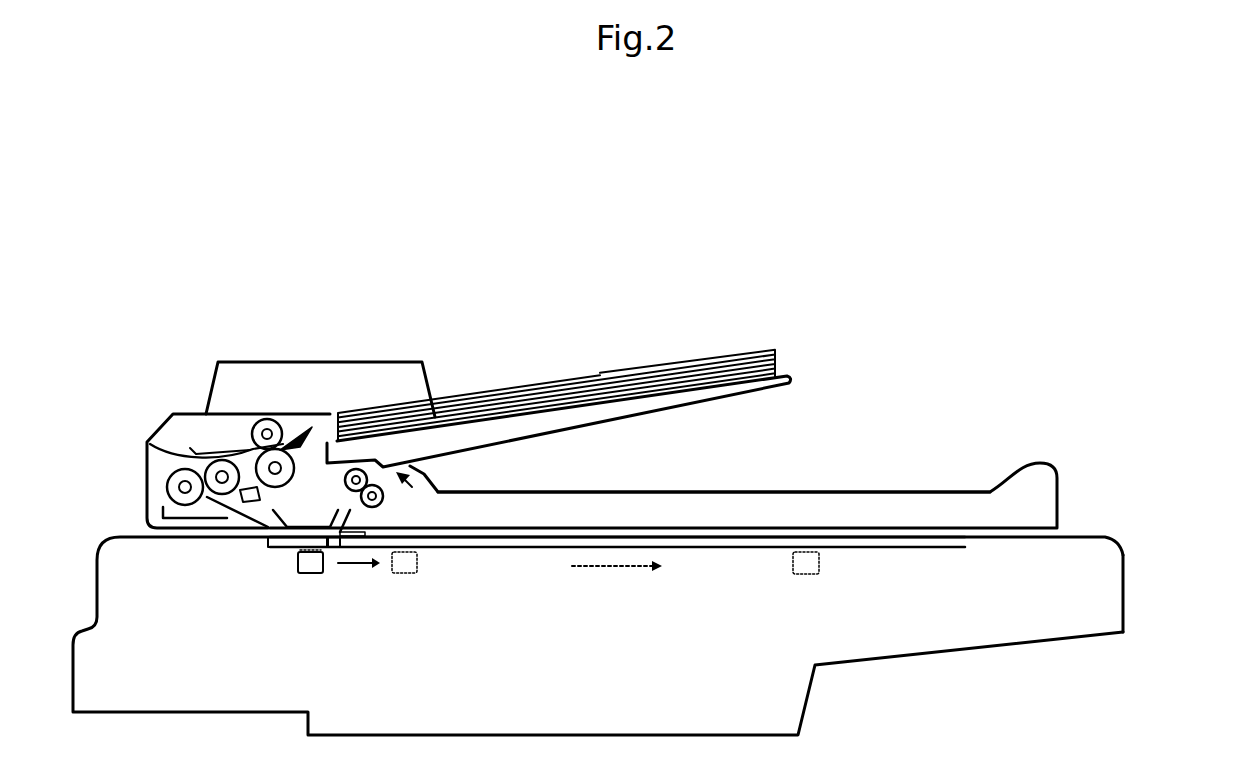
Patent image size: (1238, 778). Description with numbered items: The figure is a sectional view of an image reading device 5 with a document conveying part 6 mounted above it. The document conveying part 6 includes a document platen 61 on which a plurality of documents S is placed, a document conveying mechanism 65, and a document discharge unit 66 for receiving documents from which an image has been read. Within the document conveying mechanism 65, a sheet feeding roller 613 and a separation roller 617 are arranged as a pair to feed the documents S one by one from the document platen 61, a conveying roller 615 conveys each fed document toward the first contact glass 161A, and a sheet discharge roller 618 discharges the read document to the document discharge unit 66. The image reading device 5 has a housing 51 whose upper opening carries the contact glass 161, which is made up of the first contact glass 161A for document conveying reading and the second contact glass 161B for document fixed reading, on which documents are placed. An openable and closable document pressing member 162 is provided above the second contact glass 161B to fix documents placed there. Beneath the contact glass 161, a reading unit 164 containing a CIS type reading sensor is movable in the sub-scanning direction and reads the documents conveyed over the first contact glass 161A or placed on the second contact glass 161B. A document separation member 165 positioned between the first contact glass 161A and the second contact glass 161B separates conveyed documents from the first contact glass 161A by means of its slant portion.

The image reading device 5 is at (1130, 535).
The housing 51 is at (1127, 590).
The document conveying part 6 is at (1078, 470).
The document platen 61 is at (787, 373).
The document conveying mechanism 65 is at (175, 438).
The document discharge unit 66 is at (878, 492).
The documents S is at (642, 362).
The sheet feeding roller 613 is at (274, 421).
The conveying roller 615 is at (220, 460).
The separation roller 617 is at (294, 451).
The sheet discharge roller 618 is at (423, 477).
The contact glass 161 is at (517, 569).
The first contact glass 161A is at (268, 547).
The second contact glass 161B is at (770, 548).
The document pressing member 162 is at (678, 536).
The reading unit 164 is at (299, 570).
The document separation member 165 is at (338, 548).